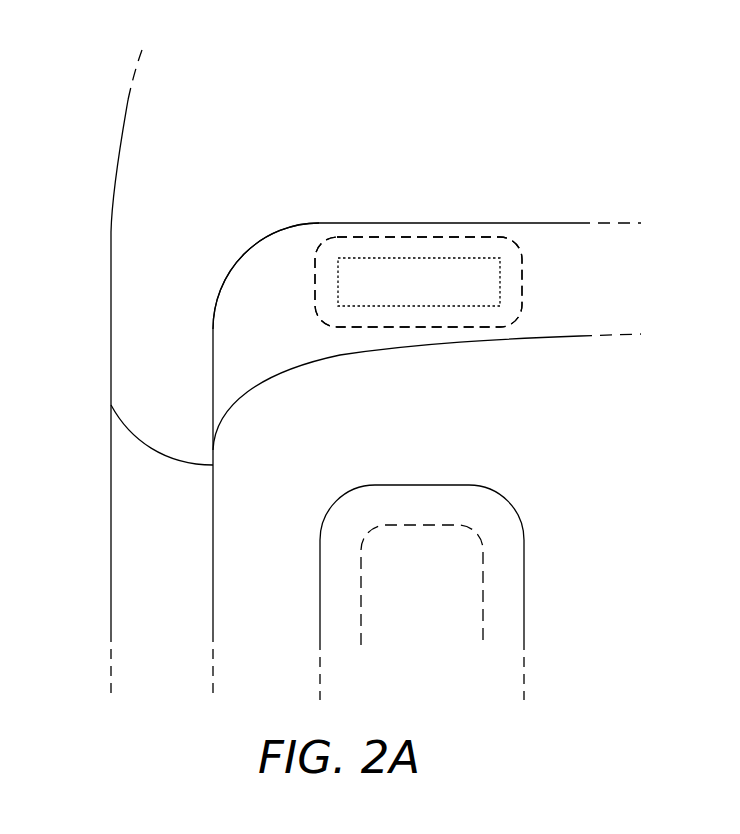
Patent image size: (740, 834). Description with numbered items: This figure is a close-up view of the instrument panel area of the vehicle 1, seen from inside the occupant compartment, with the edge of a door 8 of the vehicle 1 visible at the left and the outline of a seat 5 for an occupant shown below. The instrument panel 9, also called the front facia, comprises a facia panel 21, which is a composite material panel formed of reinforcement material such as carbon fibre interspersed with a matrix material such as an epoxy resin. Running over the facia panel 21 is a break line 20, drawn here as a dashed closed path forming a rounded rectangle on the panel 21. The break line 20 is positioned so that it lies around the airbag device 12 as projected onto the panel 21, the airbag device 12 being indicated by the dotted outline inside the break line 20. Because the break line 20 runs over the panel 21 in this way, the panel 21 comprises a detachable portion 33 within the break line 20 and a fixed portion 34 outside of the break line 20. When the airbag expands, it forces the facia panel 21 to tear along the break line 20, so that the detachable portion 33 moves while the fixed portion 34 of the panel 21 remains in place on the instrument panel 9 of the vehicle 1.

The vehicle 1 is at (98, 152).
The door 8 is at (121, 500).
The instrument panel 9 is at (228, 249).
The facia panel 21 is at (283, 252).
The break line 20 is at (362, 238).
The detachable portion 33 is at (420, 248).
The airbag device 12 is at (480, 270).
The fixed portion 34 is at (550, 238).
The seat 5 is at (512, 552).